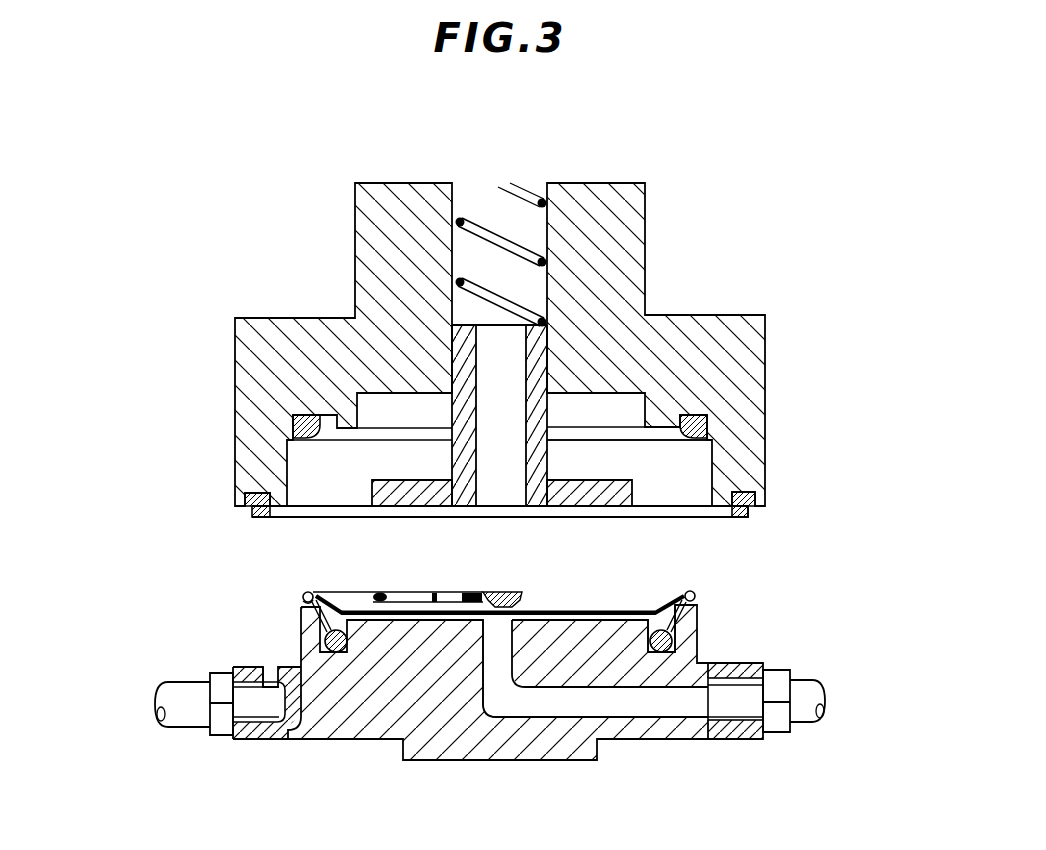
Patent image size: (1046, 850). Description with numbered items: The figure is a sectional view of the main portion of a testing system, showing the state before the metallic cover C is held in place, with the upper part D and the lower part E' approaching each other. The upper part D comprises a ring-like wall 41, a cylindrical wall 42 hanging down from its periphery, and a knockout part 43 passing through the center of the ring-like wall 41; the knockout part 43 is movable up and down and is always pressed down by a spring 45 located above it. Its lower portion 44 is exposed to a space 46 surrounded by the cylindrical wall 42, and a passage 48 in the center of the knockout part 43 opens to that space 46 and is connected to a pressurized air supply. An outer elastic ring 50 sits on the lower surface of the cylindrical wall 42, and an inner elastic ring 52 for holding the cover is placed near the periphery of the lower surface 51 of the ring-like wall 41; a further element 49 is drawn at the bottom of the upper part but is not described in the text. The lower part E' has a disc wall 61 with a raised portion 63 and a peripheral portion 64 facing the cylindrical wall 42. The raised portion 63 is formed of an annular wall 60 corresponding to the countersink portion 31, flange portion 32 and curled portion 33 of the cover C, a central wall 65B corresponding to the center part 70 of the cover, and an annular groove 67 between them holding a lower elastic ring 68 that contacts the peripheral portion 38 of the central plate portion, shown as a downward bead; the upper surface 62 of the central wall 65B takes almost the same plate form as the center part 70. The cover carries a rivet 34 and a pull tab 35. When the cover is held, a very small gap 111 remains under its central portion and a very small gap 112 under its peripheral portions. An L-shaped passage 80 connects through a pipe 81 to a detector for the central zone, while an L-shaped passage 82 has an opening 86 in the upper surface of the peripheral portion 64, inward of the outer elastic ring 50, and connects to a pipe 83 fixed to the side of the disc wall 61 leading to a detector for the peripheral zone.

The countersink portion 31 is at (333, 600).
The flange portion 32 is at (306, 593).
The curled portion 33 is at (302, 598).
The rivet 34 is at (500, 592).
The pull tab 35 is at (403, 597).
The peripheral portion of the central plate portion 38 is at (343, 618).
The ring-like wall 41 is at (728, 338).
The cylindrical wall 42 is at (752, 462).
The knockout part 43 is at (530, 323).
The lower portion of the knockout part 44 is at (607, 495).
The spring 45 is at (466, 222).
The space 46 is at (683, 480).
The passage 48 is at (488, 363).
The bottom plate 49 is at (281, 507).
The outer elastic ring 50 is at (242, 494).
The lower surface of the ring-like wall 51 is at (337, 428).
The inner elastic ring 52 is at (293, 420).
The annular wall 60 is at (310, 620).
The disc wall 61 is at (453, 750).
The upper surface of the central wall 62 is at (613, 617).
The raised portion 63 is at (707, 600).
The peripheral portion 64 is at (247, 675).
The central wall 65B is at (542, 625).
The annular groove 67 is at (345, 652).
The lower elastic ring 68 is at (333, 655).
The center part 70 is at (597, 613).
The passage 80 is at (697, 707).
The pipe 81 is at (805, 719).
The L-shaped passage 82 is at (285, 702).
The pipe 83 is at (186, 716).
The opening 86 is at (287, 672).
The very small gap 111 is at (585, 613).
The very small gap 112 is at (683, 652).
The metallic cover C is at (441, 588).
The upper part D is at (703, 268).
The lower part E' is at (164, 601).